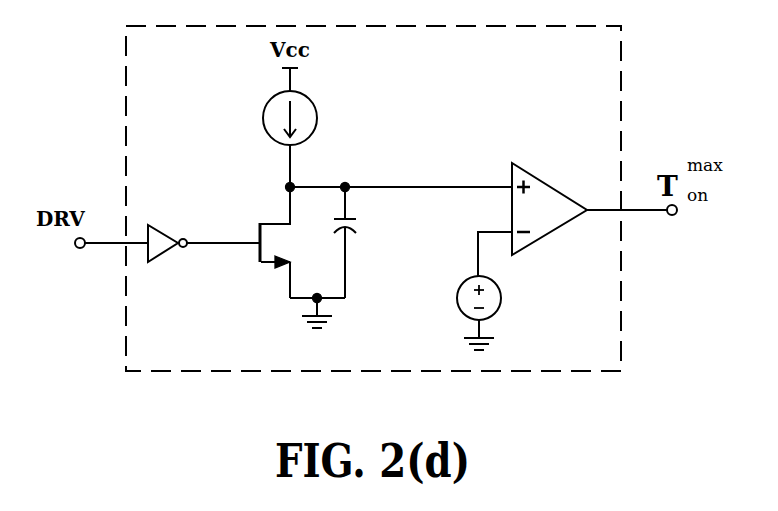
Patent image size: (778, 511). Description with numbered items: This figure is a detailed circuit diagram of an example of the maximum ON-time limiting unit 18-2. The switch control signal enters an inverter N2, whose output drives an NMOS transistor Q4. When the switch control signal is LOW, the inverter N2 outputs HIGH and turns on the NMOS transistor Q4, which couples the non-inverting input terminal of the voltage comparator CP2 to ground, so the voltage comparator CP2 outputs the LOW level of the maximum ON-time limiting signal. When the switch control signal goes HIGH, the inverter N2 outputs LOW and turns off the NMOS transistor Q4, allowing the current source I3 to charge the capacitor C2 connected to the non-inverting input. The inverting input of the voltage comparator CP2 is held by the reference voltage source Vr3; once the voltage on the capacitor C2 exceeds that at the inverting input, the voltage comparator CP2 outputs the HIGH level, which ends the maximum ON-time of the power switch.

The maximum ON-time limiting unit 18-2 is at (621, 92).
The current source I3 is at (273, 118).
The inverter N2 is at (160, 255).
The NMOS transistor Q4 is at (262, 224).
The capacitor C2 is at (362, 242).
The voltage comparator CP2 is at (553, 183).
The reference voltage source Vr3 is at (454, 298).